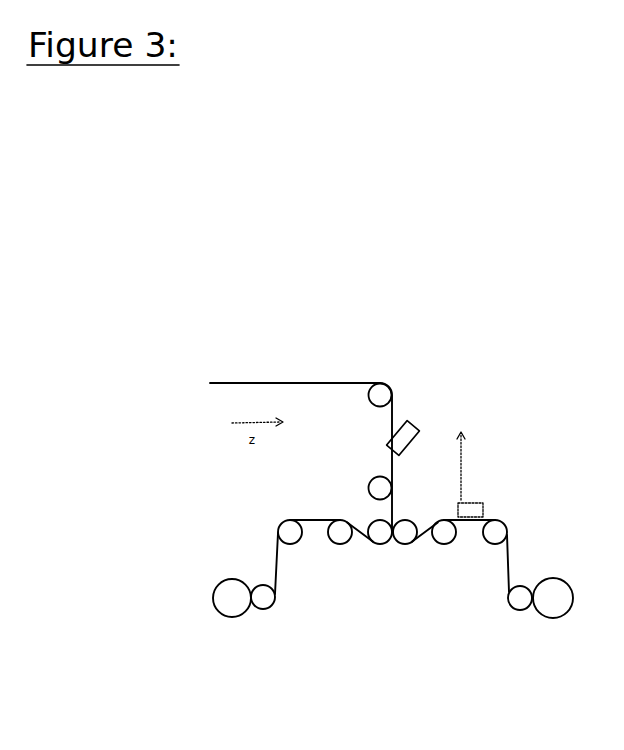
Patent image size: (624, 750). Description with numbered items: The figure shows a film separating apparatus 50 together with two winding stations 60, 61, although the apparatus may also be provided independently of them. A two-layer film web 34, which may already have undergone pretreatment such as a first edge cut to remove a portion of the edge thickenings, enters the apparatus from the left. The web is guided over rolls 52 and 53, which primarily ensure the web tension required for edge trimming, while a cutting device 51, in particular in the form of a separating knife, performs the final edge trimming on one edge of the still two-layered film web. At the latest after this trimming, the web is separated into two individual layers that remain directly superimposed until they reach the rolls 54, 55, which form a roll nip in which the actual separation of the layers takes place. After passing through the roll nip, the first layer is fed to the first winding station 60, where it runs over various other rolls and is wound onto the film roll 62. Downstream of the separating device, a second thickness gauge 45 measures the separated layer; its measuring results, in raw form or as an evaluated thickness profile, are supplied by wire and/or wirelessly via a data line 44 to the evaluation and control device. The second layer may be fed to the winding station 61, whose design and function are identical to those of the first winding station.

The film web 34 is at (270, 383).
The data line 44 is at (461, 455).
The second thickness gauge 45 is at (470, 503).
The film separating apparatus 50 is at (394, 433).
The cutting device 51 is at (420, 431).
The roll 52 is at (378, 398).
The roll 53 is at (378, 490).
The roll 54 is at (380, 535).
The roll 55 is at (406, 535).
The first winding station 60 is at (560, 605).
The winding station 61 is at (217, 641).
The film roll 62 is at (557, 592).